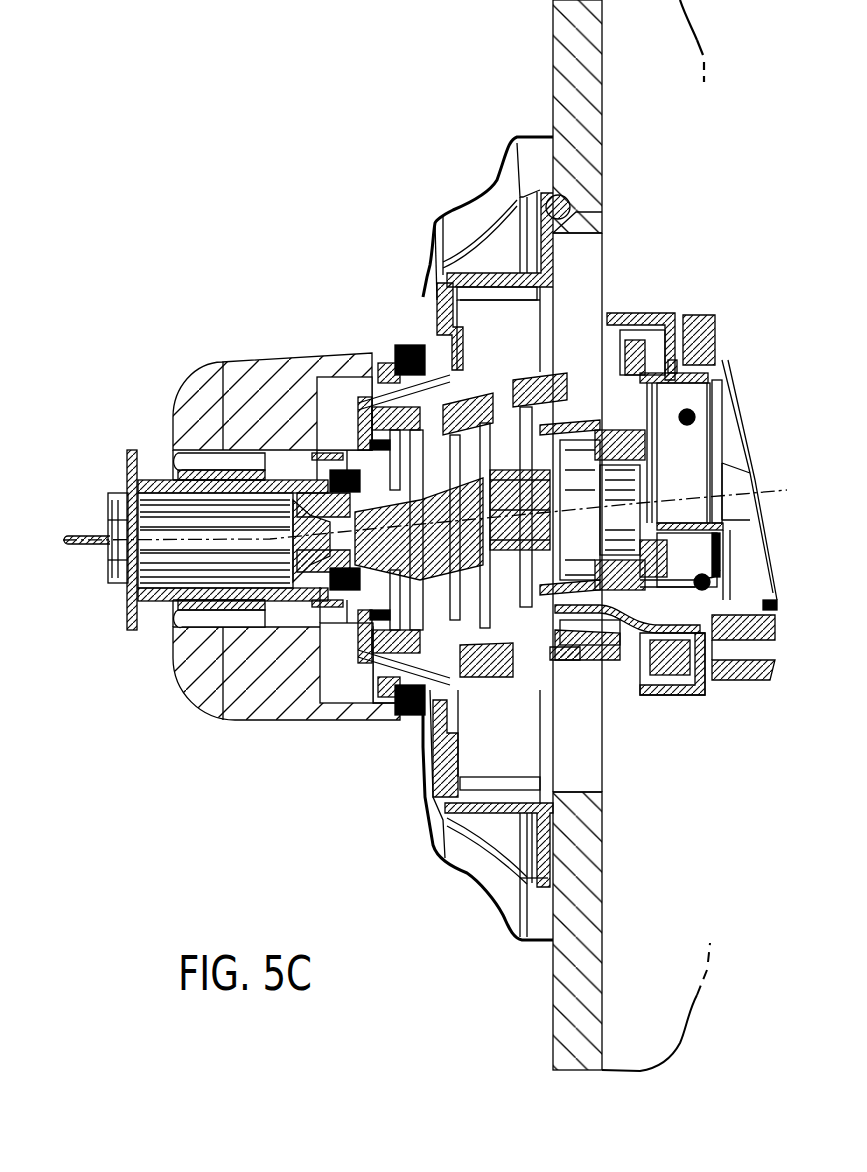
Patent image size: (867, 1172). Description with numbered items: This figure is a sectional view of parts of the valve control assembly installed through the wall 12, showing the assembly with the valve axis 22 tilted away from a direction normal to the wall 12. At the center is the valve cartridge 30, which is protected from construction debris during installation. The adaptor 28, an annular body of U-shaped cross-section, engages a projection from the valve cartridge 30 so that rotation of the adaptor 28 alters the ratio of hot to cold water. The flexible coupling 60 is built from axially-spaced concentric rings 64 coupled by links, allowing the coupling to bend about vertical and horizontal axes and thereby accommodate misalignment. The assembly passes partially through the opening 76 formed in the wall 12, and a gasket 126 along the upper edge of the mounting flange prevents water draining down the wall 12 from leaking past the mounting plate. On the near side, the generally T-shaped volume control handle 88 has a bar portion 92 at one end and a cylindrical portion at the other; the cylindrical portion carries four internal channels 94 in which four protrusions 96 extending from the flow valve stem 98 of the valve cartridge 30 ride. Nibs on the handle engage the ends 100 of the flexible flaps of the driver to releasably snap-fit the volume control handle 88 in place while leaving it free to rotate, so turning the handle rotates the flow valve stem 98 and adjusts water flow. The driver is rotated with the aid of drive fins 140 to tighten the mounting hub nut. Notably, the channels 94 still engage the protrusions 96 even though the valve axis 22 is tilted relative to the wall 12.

The wall 12 is at (553, 16).
The valve axis 22 is at (783, 487).
The adaptor 28 is at (662, 310).
The valve cartridge 30 is at (503, 408).
The flexible coupling 60 is at (582, 665).
The concentric rings 64 is at (583, 407).
The opening 76 is at (578, 236).
The volume control handle 88 is at (108, 494).
The bar portion 92 is at (82, 545).
The internal channels 94 is at (150, 506).
The protrusions 96 is at (306, 495).
The flow valve stem 98 is at (384, 488).
The ends of flaps 100 is at (247, 463).
The gasket 126 is at (572, 205).
The drive fins 140 is at (190, 395).